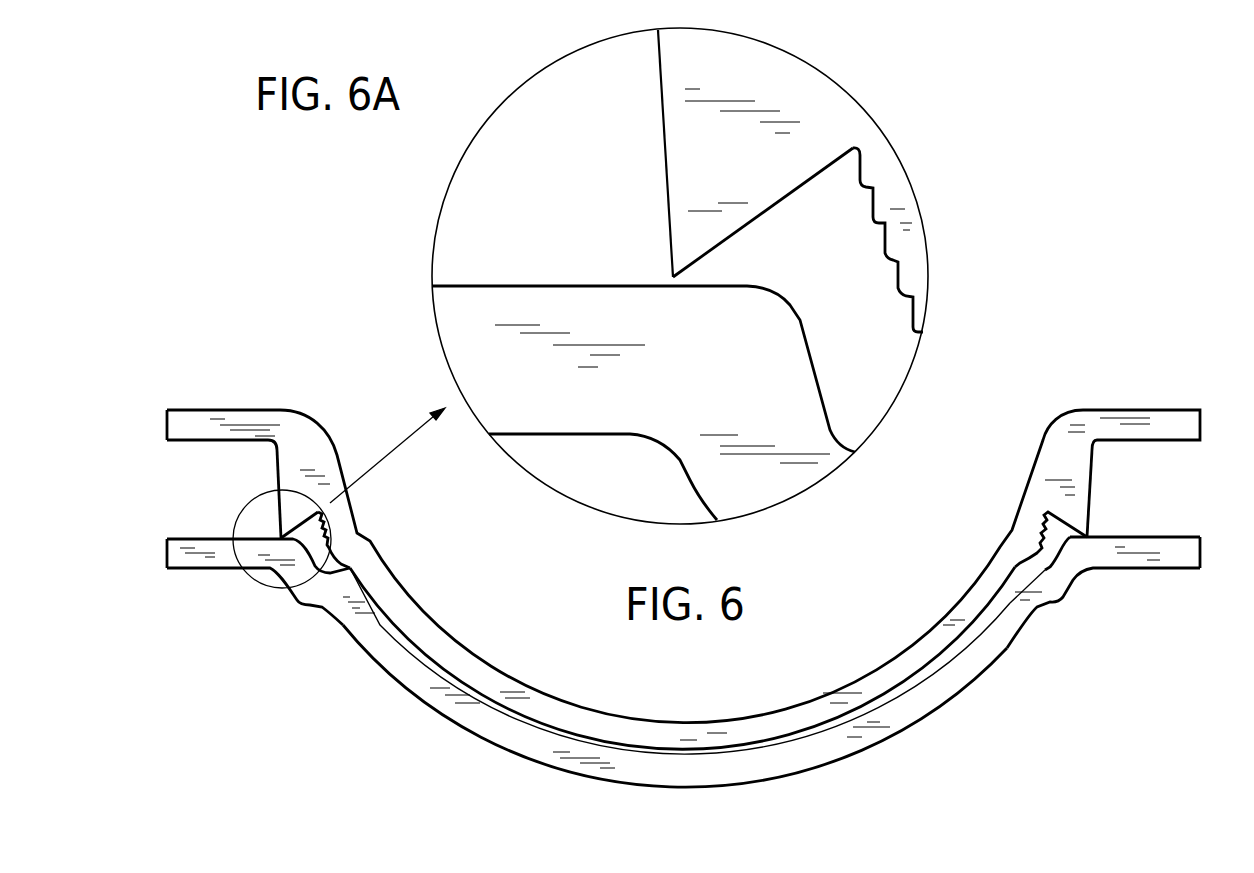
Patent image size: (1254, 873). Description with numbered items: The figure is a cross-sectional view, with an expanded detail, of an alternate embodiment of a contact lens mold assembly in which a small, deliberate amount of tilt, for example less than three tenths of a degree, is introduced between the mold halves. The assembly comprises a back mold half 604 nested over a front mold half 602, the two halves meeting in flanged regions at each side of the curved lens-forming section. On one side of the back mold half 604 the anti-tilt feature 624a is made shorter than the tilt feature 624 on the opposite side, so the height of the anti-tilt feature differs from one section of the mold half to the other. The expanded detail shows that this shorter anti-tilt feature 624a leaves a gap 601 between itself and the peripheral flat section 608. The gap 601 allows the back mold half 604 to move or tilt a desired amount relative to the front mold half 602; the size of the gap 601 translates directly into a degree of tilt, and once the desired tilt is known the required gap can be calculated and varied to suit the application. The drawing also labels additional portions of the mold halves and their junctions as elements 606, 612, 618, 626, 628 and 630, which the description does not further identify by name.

In FIG. 6A, the gap 601 is at (672, 278).
In FIG. 6, the gap 601 is at (280, 538).
In FIG. 6A, the front mold half 602 is at (558, 308).
In FIG. 6, the front mold half 602 is at (482, 717).
In FIG. 6A, the back mold half 604 is at (797, 78).
In FIG. 6, the back mold half 604 is at (493, 683).
In FIG. 6, the bottom surface 606 is at (653, 757).
In FIG. 6, the peripheral flat section 608 is at (1177, 537).
In FIG. 6, the interface line 612 is at (640, 745).
In FIG. 6A, the serrated edge 618 is at (870, 220).
In FIG. 6, the serrated edge 618 is at (1052, 525).
In FIG. 6, the tilt feature 624 is at (1087, 533).
In FIG. 6A, the anti-tilt feature 624a is at (660, 130).
In FIG. 6, the anti-tilt feature 624a is at (277, 515).
In FIG. 6, the transition region 626 is at (1045, 570).
In FIG. 6, the flange top surface 628 is at (1092, 537).
In FIG. 6, the corner transition 630 is at (1087, 537).